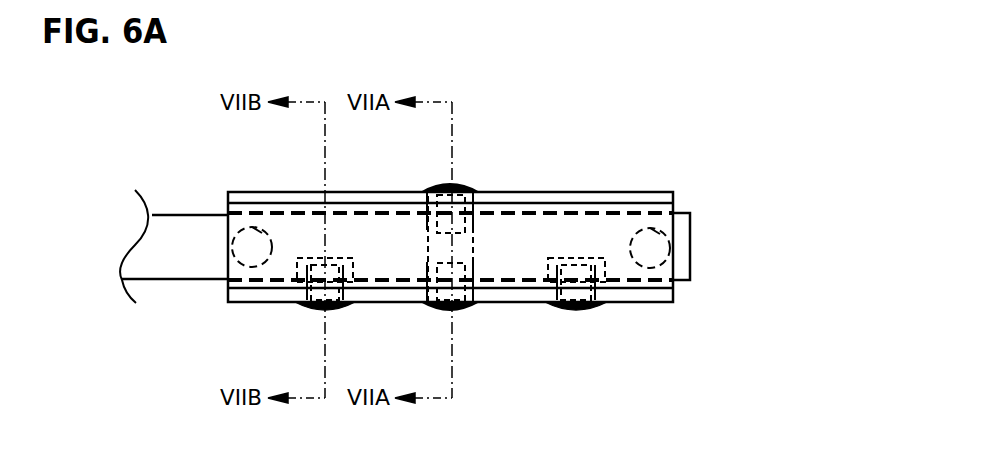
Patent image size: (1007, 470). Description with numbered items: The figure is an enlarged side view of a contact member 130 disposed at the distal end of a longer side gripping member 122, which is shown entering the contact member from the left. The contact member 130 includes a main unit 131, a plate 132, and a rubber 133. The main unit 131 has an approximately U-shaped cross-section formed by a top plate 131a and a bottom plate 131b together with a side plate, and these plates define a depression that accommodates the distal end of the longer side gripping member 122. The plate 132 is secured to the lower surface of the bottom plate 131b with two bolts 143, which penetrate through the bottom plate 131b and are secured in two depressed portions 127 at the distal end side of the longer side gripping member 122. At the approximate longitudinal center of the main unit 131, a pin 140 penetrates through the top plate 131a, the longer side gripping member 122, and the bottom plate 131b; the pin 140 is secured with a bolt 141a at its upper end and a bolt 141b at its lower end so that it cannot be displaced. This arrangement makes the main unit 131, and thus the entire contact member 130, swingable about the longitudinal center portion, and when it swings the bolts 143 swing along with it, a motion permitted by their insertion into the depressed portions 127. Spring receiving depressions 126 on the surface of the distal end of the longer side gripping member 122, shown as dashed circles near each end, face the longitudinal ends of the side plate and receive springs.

The longer side gripping member 122 is at (187, 214).
The spring receiving depression 126 is at (256, 186).
The depressed portion 127 is at (288, 312).
The contact member 130 is at (680, 174).
The main unit 131 is at (585, 192).
The top plate 131a is at (527, 198).
The bottom plate 131b is at (533, 301).
The plate 132 is at (655, 304).
The rubber 133 is at (245, 305).
The pin 140 is at (476, 247).
The bolt 141a is at (455, 190).
The bolt 141b is at (463, 310).
The bolt 143 is at (330, 316).